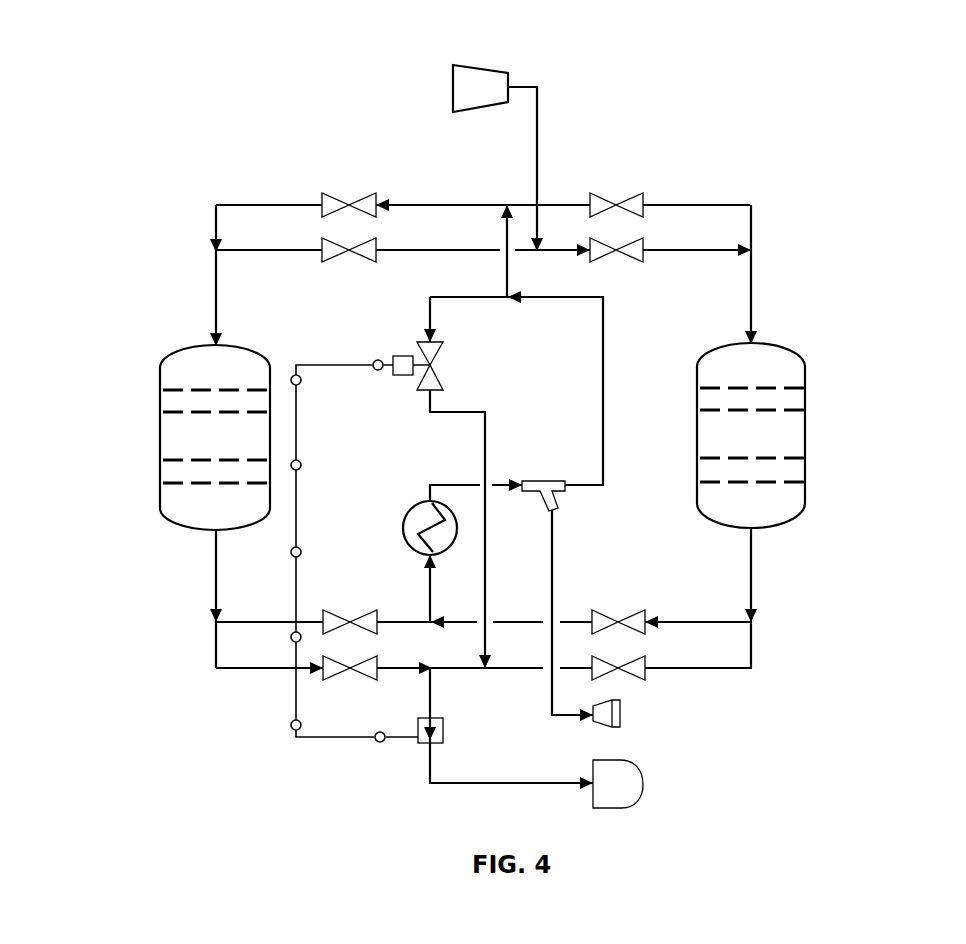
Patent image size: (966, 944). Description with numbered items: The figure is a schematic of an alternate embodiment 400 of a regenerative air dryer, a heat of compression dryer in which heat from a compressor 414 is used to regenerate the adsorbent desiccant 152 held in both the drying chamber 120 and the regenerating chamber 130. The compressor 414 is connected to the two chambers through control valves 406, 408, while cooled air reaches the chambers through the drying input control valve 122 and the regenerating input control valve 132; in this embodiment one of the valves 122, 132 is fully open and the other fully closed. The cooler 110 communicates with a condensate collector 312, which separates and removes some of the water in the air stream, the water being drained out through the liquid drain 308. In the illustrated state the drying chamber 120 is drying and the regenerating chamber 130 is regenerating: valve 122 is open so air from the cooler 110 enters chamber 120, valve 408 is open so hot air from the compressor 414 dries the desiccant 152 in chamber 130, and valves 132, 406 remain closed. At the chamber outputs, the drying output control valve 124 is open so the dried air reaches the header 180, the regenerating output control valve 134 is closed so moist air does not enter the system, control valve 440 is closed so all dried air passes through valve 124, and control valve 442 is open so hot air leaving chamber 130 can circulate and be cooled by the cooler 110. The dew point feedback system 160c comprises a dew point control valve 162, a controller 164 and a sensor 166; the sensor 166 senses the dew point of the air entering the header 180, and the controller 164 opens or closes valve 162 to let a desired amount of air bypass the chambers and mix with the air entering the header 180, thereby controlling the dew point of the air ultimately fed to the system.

The alternate embodiment 400 is at (768, 85).
The compressor 414 is at (476, 83).
The drying input control valve 122 is at (325, 198).
The control valve 406 is at (328, 255).
The regenerating input control valve 132 is at (641, 198).
The control valve 408 is at (641, 255).
The dew point feedback system 160c is at (484, 375).
The dew point control valve 162 is at (420, 357).
The controller 164 is at (393, 362).
The condensate collector 312 is at (542, 482).
The cooler 110 is at (415, 522).
The control valve 440 is at (372, 618).
The drying output control valve 124 is at (378, 672).
The control valve 442 is at (642, 618).
The regenerating output control valve 134 is at (645, 670).
The sensor 166 is at (420, 740).
The liquid drain 308 is at (622, 712).
The header 180 is at (625, 790).
The drying chamber 120 is at (158, 520).
The regenerating chamber 130 is at (792, 343).
The adsorbent desiccant 152 is at (195, 485).